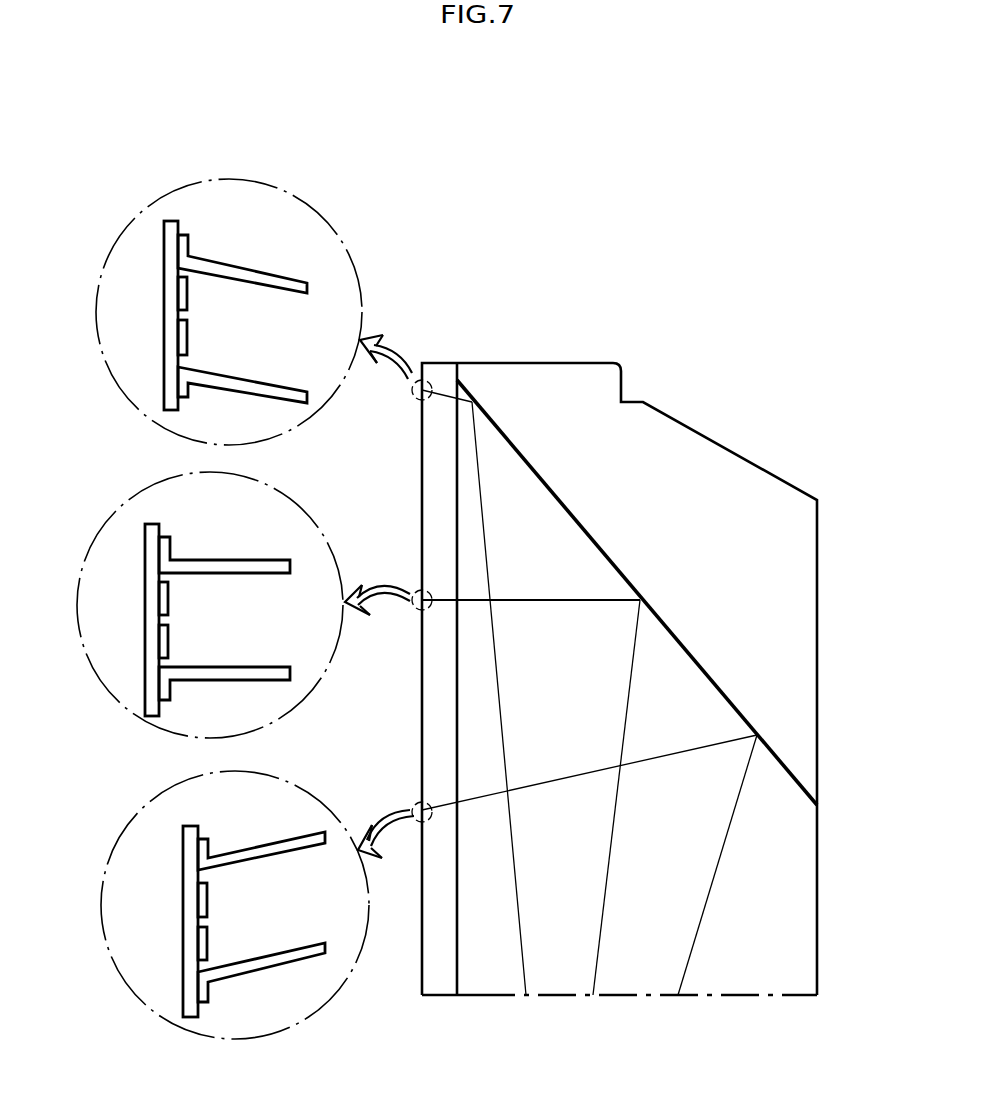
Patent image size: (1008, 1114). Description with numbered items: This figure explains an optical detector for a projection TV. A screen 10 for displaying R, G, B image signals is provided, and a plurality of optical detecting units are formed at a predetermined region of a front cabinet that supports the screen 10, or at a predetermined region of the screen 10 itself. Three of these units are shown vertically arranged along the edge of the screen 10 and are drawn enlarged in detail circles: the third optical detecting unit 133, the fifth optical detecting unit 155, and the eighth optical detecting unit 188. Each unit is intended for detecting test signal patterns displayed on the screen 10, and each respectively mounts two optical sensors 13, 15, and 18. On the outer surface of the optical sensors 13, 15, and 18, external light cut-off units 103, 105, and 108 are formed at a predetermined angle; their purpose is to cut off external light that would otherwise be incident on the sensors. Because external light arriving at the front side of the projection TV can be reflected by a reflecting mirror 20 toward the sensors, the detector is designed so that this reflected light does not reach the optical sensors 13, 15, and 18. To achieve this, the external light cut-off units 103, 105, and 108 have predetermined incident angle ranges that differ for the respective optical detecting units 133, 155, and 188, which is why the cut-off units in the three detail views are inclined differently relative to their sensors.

The screen 10 is at (422, 958).
The reflecting mirror 20 is at (722, 690).
The third optical detecting unit 133 is at (190, 182).
The external light cut-off unit 103 is at (253, 270).
The optical sensors 13 is at (178, 335).
The fifth optical detecting unit 155 is at (135, 490).
The external light cut-off unit 105 is at (225, 560).
The optical sensors 15 is at (159, 641).
The eighth optical detecting unit 188 is at (117, 838).
The external light cut-off unit 108 is at (267, 845).
The optical sensors 18 is at (198, 945).